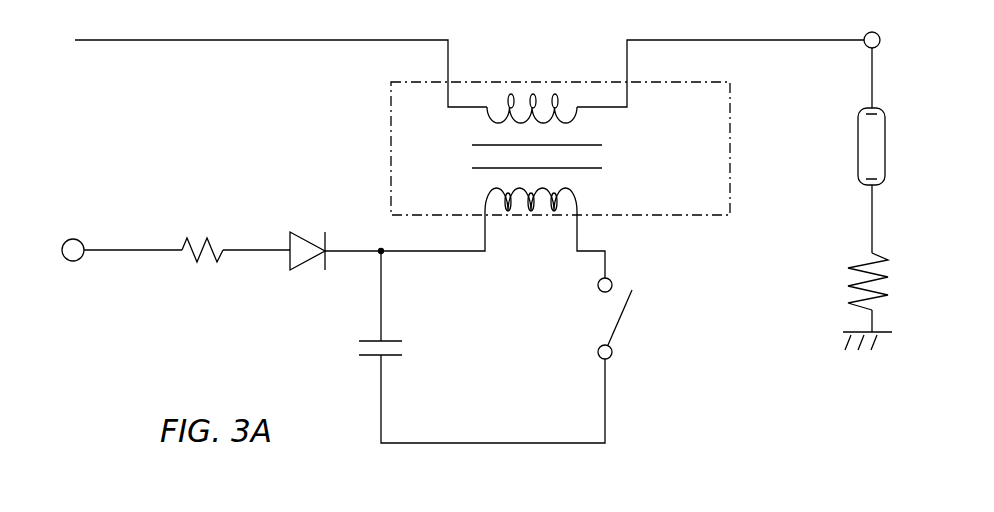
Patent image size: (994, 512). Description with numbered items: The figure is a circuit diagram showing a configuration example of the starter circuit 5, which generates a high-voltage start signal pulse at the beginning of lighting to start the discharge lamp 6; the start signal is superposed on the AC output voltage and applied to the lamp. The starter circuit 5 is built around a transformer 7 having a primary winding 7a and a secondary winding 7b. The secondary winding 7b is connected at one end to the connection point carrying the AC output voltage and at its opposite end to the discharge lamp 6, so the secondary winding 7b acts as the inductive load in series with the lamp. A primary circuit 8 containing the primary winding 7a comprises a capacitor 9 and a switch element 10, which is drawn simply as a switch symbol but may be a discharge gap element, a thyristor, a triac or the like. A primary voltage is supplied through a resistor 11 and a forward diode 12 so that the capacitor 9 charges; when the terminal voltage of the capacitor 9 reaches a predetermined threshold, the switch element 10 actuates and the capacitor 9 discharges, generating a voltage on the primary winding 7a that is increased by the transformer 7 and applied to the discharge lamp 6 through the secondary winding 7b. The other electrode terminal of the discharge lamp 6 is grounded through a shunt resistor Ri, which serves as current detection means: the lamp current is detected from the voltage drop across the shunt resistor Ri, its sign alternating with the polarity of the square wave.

The starter circuit 5 is at (464, 255).
The discharge lamp 6 is at (858, 148).
The transformer 7 is at (390, 150).
The primary winding 7a is at (577, 200).
The secondary winding 7b is at (535, 102).
The primary circuit 8 is at (531, 353).
The capacitor 9 is at (372, 340).
The switch element 10 is at (620, 317).
The resistor 11 is at (205, 263).
The forward diode 12 is at (298, 268).
The shunt resistor Ri is at (852, 281).